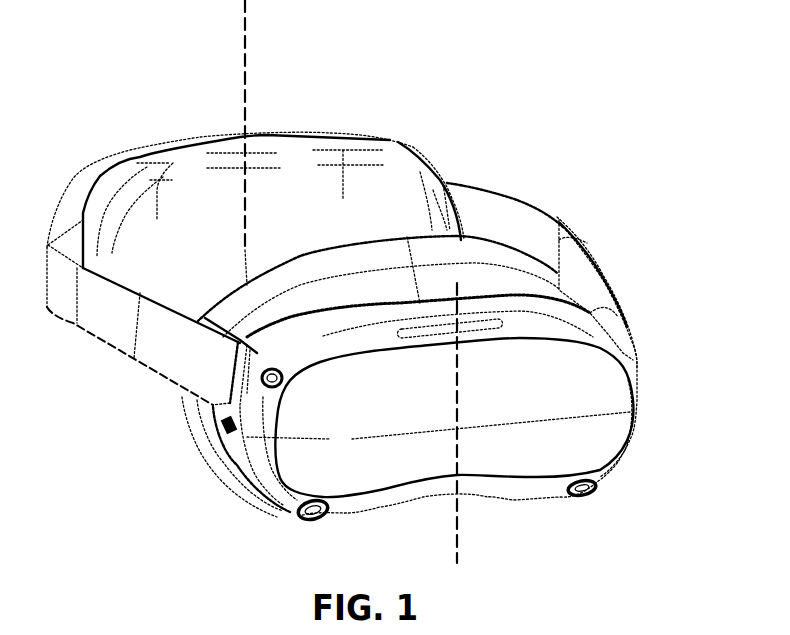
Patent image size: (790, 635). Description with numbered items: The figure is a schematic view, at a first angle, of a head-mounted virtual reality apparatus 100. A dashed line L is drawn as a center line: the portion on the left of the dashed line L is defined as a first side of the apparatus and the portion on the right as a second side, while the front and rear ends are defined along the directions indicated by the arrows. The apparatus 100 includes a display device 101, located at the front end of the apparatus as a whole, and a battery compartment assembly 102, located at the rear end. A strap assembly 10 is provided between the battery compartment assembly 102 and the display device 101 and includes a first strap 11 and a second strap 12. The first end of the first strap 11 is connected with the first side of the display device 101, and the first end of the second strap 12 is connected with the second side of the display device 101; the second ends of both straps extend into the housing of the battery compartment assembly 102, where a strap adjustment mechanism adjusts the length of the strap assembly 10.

The head-mounted virtual reality apparatus 100 is at (110, 111).
The strap assembly 10 is at (565, 192).
The display device 101 is at (595, 393).
The battery compartment assembly 102 is at (407, 143).
The first strap 11 is at (573, 243).
The second strap 12 is at (126, 356).
The dashed line L is at (260, 64).